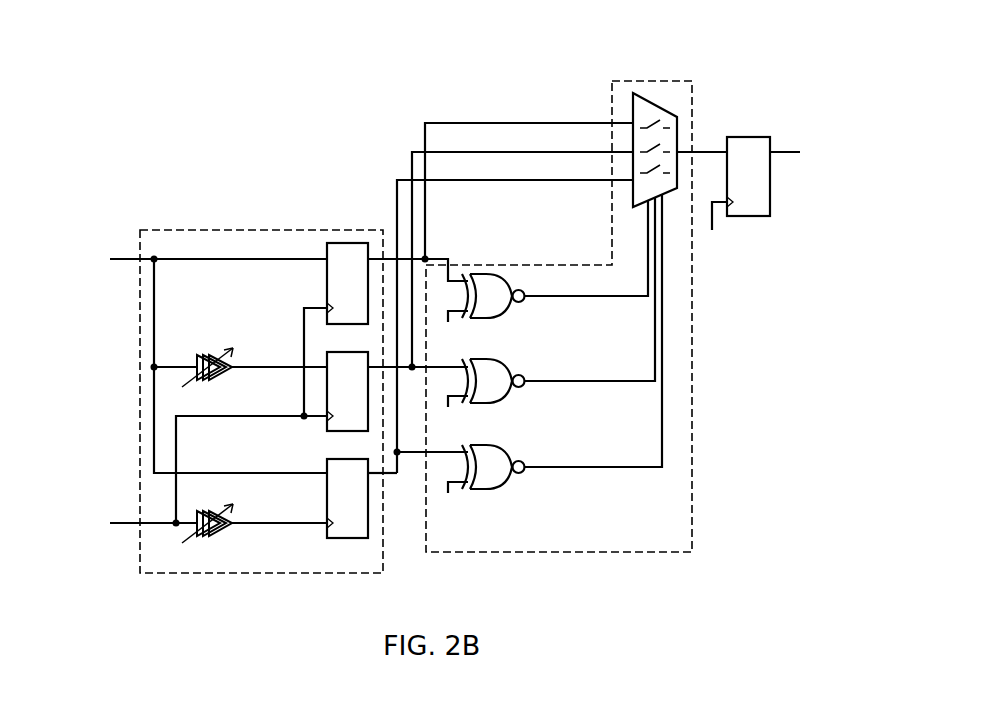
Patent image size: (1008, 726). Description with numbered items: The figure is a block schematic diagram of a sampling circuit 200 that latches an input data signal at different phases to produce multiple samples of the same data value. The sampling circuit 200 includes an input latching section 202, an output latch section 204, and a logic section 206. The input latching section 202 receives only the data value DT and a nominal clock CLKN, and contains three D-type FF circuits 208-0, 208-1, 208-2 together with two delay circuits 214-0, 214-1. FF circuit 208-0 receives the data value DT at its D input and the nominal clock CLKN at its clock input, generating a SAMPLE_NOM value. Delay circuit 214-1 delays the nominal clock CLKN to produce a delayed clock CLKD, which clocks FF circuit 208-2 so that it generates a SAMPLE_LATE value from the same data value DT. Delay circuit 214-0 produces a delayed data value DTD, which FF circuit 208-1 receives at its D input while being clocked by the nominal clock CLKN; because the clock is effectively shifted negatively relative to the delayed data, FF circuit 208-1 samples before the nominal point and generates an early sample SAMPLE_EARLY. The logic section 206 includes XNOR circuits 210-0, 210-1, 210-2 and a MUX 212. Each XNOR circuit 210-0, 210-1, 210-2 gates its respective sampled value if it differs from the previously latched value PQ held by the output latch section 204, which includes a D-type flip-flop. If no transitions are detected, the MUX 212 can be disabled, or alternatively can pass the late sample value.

The sampling circuit 200 is at (268, 106).
The input latching section 202 is at (244, 228).
The output latch section 204 is at (748, 176).
The logic section 206 is at (696, 372).
The D-type FF circuit 208-0 is at (349, 283).
The D-type FF circuit 208-1 is at (349, 391).
The D-type FF circuit 208-2 is at (349, 498).
The XNOR circuit 210-0 is at (493, 304).
The XNOR circuit 210-1 is at (493, 389).
The XNOR circuit 210-2 is at (493, 475).
The MUX 212 is at (652, 110).
The delay circuit 214-0 is at (201, 352).
The delay circuit 214-1 is at (226, 535).